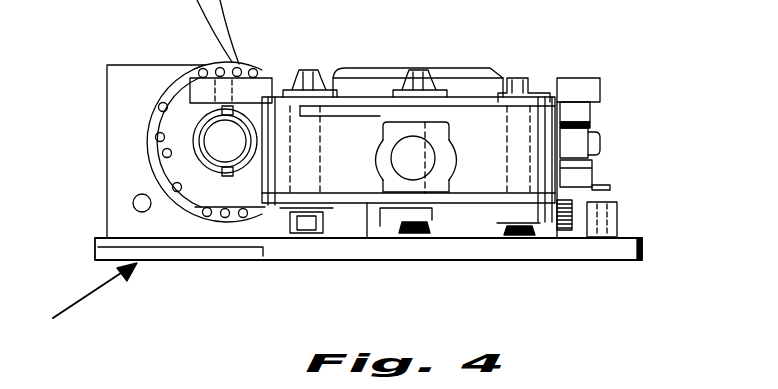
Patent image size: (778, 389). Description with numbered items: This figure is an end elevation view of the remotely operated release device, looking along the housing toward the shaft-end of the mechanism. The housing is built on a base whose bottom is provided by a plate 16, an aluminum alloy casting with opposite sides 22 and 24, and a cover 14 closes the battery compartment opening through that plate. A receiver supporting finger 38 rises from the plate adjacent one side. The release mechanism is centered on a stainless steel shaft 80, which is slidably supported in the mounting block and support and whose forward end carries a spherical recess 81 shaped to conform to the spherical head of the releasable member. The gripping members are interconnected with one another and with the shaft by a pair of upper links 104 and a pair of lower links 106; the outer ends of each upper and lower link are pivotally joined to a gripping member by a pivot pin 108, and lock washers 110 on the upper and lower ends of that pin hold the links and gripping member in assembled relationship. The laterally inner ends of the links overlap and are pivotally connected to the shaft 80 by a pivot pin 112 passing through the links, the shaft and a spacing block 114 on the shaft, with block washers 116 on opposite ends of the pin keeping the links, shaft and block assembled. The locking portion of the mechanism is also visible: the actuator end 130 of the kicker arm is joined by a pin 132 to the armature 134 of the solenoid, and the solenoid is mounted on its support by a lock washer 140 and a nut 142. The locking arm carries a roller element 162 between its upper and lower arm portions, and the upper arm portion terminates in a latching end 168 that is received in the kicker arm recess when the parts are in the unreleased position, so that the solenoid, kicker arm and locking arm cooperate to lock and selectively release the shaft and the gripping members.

The cover 14 is at (79, 307).
The plate 16 is at (630, 237).
The side 22 is at (642, 250).
The side 24 is at (95, 251).
The receiver supporting finger 38 is at (614, 205).
The shaft 80 is at (388, 137).
The spherical recess 81 is at (410, 163).
The upper links 104 is at (350, 102).
The lower links 106 is at (343, 200).
The pivot pin 108 is at (308, 68).
The lock washers 110 is at (272, 90).
The pivot pin 112 is at (417, 70).
The spacing block 114 is at (453, 140).
The block washers 116 is at (446, 100).
The actuator end 130 is at (203, 88).
The pin 132 is at (195, 158).
The armature 134 is at (203, 131).
The lock washer 140 is at (185, 93).
The nut 142 is at (220, 150).
The roller element 162 is at (601, 143).
The latching end 168 is at (601, 90).